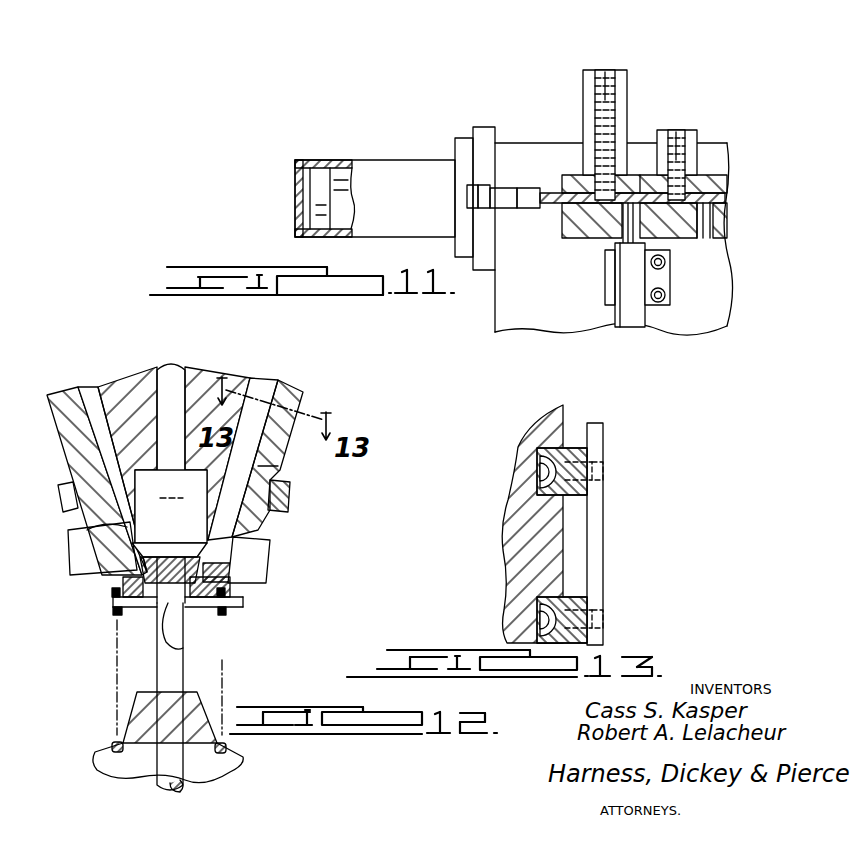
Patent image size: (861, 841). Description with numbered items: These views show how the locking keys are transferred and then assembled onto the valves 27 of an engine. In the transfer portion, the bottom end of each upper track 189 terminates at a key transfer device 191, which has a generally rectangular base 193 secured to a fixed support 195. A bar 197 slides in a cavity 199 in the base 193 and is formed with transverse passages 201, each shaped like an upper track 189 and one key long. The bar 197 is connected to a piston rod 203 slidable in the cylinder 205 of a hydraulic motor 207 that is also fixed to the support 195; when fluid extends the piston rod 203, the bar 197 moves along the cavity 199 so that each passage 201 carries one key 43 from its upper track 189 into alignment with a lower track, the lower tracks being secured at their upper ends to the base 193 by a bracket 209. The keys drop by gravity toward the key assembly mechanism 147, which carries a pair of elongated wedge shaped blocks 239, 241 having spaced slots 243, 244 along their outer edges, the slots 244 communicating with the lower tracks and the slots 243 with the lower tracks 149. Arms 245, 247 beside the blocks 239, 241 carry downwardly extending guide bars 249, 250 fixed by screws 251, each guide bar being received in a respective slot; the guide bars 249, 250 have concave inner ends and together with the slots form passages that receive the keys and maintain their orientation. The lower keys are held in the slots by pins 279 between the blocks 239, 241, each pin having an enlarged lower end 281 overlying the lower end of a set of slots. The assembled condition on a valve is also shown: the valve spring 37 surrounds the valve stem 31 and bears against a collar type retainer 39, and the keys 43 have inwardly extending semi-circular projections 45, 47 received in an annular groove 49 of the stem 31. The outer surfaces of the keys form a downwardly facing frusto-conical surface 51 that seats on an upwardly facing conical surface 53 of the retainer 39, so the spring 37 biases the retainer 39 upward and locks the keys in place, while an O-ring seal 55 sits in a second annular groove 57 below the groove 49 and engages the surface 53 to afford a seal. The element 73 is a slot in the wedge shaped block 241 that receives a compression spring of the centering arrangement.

In FIG. 12, the valve 27 is at (215, 692).
In FIG. 12, the valve stem 31 is at (150, 702).
In FIG. 12, the valve spring 37 is at (232, 618).
In FIG. 12, the retainer 39 is at (112, 592).
In FIG. 11, the locking key 43 is at (600, 86).
In FIG. 12, the locking key 43 is at (270, 556).
In FIG. 12, the semi-circular projection 45 is at (88, 562).
In FIG. 12, the semi-circular projection 47 is at (105, 590).
In FIG. 12, the annular groove 49 is at (246, 556).
In FIG. 12, the frusto-conical surface 51 is at (125, 610).
In FIG. 12, the conical surface 53 is at (117, 642).
In FIG. 12, the O-ring seal 55 is at (238, 597).
In FIG. 12, the annular groove 57 is at (186, 650).
In FIG. 12, the hex nut 73 is at (302, 560).
In FIG. 12, the key assembly mechanism 147 is at (332, 393).
In FIG. 11, the lower track 149 is at (640, 305).
In FIG. 11, the upper track 189 is at (625, 92).
In FIG. 11, the key transfer device 191 is at (455, 124).
In FIG. 11, the base 193 is at (520, 142).
In FIG. 11, the fixed support 195 is at (480, 128).
In FIG. 11, the bar 197 is at (720, 197).
In FIG. 11, the cavity 199 is at (640, 176).
In FIG. 11, the transverse passage 201 is at (730, 212).
In FIG. 11, the piston rod 203 is at (512, 208).
In FIG. 11, the cylinder 205 is at (360, 160).
In FIG. 11, the hydraulic motor 207 is at (328, 142).
In FIG. 11, the bracket 209 is at (672, 288).
In FIG. 12, the wedge shaped block 239 is at (117, 385).
In FIG. 12, the wedge shaped block 241 is at (227, 378).
In FIG. 12, the slot 243 is at (90, 448).
In FIG. 13, the slot 243 is at (536, 470).
In FIG. 12, the slot 244 is at (283, 490).
In FIG. 12, the arm 245 is at (74, 494).
In FIG. 12, the arm 247 is at (290, 533).
In FIG. 12, the guide bar 249 is at (80, 362).
In FIG. 13, the guide bar 249 is at (570, 448).
In FIG. 12, the guide bar 250 is at (272, 466).
In FIG. 13, the screw 251 is at (606, 452).
In FIG. 12, the pin 279 is at (182, 366).
In FIG. 12, the enlarged lower end 281 is at (98, 524).